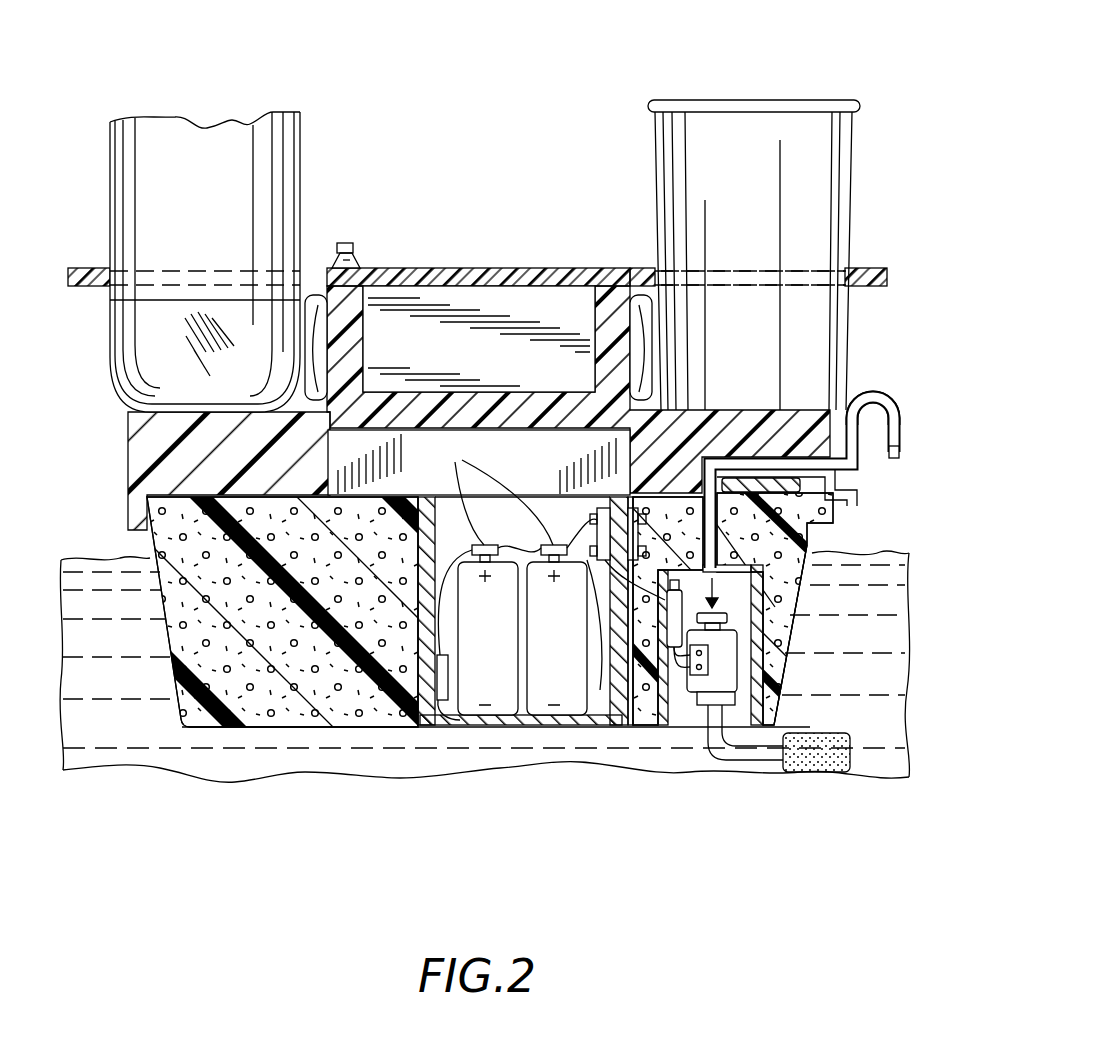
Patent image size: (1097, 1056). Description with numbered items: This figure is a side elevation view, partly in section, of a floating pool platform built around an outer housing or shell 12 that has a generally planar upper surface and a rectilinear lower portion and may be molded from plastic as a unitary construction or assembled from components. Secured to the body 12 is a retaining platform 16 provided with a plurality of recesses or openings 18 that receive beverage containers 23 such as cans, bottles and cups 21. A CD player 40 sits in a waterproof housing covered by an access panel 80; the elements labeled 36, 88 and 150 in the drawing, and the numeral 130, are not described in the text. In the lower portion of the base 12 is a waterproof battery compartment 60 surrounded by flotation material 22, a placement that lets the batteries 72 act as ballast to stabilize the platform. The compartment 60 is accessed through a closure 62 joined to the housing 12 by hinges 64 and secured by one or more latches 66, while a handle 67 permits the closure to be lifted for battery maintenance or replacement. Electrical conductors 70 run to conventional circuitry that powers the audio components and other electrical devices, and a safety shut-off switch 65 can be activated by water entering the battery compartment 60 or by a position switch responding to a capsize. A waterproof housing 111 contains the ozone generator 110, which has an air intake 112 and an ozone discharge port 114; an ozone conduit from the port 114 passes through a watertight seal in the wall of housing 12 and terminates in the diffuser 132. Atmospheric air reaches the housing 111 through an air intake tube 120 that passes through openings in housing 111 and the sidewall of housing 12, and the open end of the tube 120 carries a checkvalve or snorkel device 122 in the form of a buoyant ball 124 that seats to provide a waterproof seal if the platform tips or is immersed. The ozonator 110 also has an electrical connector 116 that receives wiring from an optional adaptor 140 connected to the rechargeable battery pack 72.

The outer housing or shell 12 is at (136, 424).
The retaining platform 16 is at (94, 268).
The recesses or openings 18 is at (864, 268).
The cups 21 is at (745, 130).
The flotation material 22 is at (168, 538).
The beverage containers 23 is at (155, 150).
The gasket 36 is at (314, 296).
The CD player 40 is at (545, 300).
The battery compartment 60 is at (700, 490).
The closure 62 is at (616, 722).
The hinges 64 is at (400, 746).
The safety shut-off switch 65 is at (400, 760).
The latches 66 is at (640, 727).
The handle 67 is at (545, 700).
The electrical conductors 70 is at (551, 574).
The batteries 72 is at (478, 700).
The access panel 80 is at (462, 268).
The switch knob 88 is at (356, 262).
The ozone generator 110 is at (785, 650).
The waterproof housing 111 is at (813, 565).
The air intake 112 is at (742, 655).
The ozone discharge port 114 is at (782, 684).
The electrical connector 116 is at (700, 690).
The air intake tube 120 is at (878, 410).
The checkvalve or snorkel device 122 is at (897, 425).
The buoyant ball 124 is at (900, 452).
The drain tube 130 is at (765, 762).
The diffuser 132 is at (830, 770).
The adaptor 140 is at (668, 700).
The switch 150 is at (446, 700).